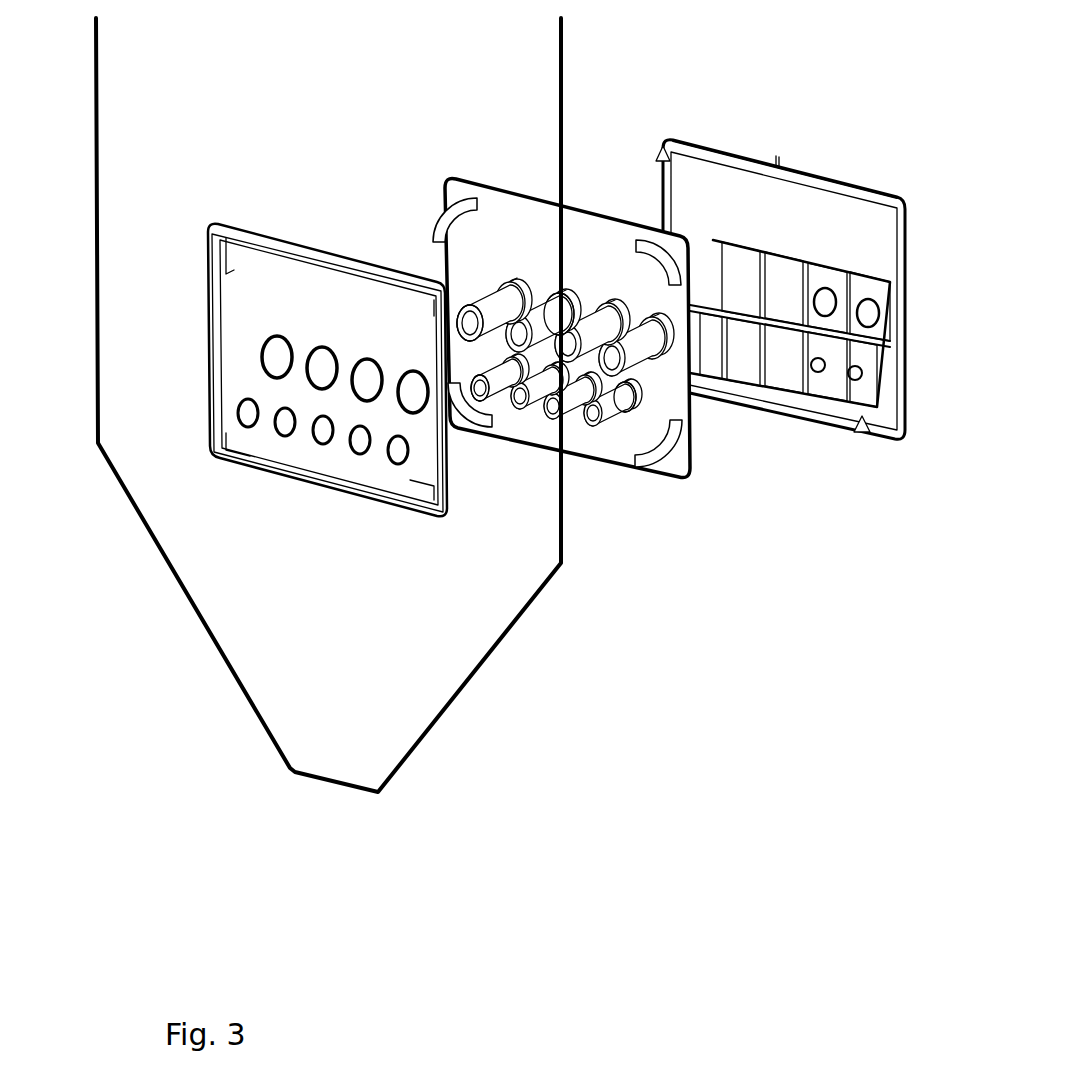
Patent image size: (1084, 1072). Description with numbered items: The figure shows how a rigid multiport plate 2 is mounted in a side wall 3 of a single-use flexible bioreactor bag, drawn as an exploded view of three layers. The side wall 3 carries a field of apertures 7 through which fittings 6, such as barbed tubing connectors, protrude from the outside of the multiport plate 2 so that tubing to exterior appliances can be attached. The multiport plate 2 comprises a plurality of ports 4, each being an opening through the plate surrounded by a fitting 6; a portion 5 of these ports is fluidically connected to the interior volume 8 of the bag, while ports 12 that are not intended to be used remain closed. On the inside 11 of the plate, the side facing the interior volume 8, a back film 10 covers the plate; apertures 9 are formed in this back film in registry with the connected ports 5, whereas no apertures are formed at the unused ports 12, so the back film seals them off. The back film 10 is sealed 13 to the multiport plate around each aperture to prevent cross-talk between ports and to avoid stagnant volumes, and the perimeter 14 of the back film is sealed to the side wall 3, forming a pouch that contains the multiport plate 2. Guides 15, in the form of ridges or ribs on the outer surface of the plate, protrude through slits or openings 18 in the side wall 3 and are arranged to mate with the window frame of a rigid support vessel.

The multiport plate 2 is at (690, 415).
The side wall 3 is at (552, 725).
The ports 4 is at (628, 335).
The portion of ports 5 is at (635, 330).
The fittings 6 is at (447, 372).
The apertures 7 is at (282, 414).
The interior volume 8 is at (905, 152).
The apertures 9 is at (818, 366).
The back film 10 is at (822, 238).
The inside 11 is at (640, 215).
The ports not intended to be used 12 is at (548, 335).
The seal 13 is at (858, 283).
The perimeter 14 is at (733, 152).
The guides 15 is at (664, 572).
The slits or openings 18 is at (433, 490).